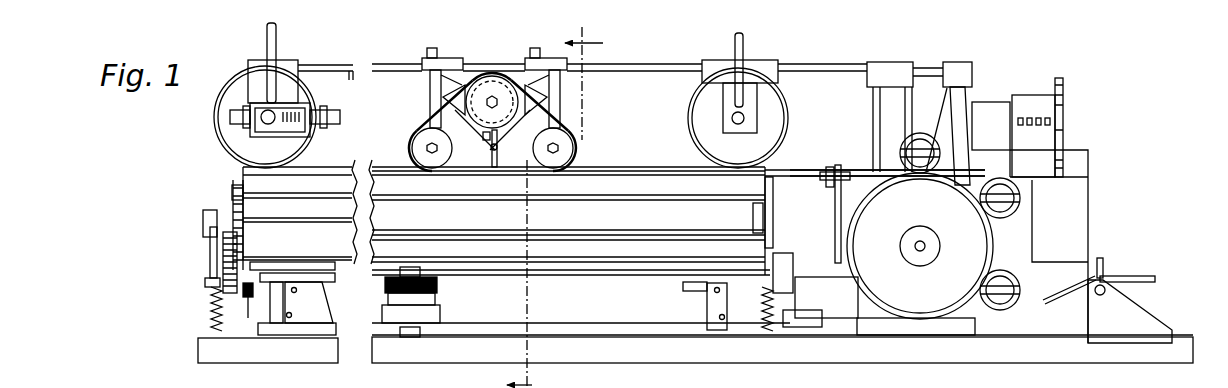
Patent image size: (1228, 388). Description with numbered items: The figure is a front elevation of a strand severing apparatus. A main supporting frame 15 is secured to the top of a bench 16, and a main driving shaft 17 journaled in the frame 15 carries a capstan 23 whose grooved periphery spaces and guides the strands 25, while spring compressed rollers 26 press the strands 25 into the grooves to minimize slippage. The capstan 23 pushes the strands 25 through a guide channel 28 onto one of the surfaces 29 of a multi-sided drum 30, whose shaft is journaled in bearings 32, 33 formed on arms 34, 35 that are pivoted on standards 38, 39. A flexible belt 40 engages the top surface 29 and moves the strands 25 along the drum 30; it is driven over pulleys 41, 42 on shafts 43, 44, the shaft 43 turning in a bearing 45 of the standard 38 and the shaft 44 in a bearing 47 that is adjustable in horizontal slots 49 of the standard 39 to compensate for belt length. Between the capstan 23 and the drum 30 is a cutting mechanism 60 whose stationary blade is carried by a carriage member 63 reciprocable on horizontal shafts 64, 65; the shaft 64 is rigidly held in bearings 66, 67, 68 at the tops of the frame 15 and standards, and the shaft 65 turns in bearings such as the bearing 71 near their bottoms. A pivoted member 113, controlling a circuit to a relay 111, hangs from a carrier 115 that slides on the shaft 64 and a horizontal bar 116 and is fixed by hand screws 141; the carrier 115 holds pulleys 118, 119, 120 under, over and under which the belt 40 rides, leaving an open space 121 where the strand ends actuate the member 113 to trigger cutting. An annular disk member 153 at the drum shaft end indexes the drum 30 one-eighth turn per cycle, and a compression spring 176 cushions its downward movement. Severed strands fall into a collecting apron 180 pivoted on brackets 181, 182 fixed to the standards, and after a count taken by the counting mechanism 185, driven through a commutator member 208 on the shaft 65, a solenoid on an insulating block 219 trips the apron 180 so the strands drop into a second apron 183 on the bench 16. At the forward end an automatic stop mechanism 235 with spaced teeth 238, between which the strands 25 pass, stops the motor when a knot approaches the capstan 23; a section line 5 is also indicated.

The section line 5 is at (555, 204).
The main supporting frame 15 is at (958, 318).
The bench 16 is at (700, 361).
The main driving shaft 17 is at (914, 248).
The capstan 23 is at (990, 245).
The strands 25 is at (1153, 253).
The spring compressed rollers 26 is at (982, 202).
The guide channel 28 is at (858, 213).
The surfaces of the drum 29 is at (657, 227).
The multi-sided drum 30 is at (613, 198).
The bearing 32 is at (772, 193).
The bearing 33 is at (232, 196).
The arm 34 is at (790, 229).
The arm 35 is at (202, 204).
The standard 38 is at (735, 60).
The standard 39 is at (283, 58).
The flexible belt 40 is at (393, 163).
The pulley 41 is at (770, 100).
The pulley 42 is at (300, 100).
The shaft 43 is at (745, 117).
The shaft 44 is at (268, 110).
The bearing 45 is at (730, 118).
The bearing 47 is at (253, 118).
The horizontal slots 49 is at (312, 104).
The cutting mechanism 60 is at (828, 206).
The carriage member 63 is at (890, 142).
The horizontal shaft 64 is at (847, 73).
The horizontal shaft 65 is at (861, 266).
The bearing 66 is at (956, 62).
The bearing 67 is at (780, 58).
The bearing 68 is at (300, 63).
The bearing 71 is at (375, 222).
The relay 111 is at (984, 100).
The pivoted member 113 is at (493, 219).
The carrier 115 is at (563, 112).
The horizontal bar 116 is at (352, 163).
The pulley 118 is at (566, 152).
The pulley 119 is at (483, 90).
The pulley 120 is at (430, 176).
The open space 121 is at (494, 168).
The hand screws 141 is at (545, 55).
The annular disk member 153 is at (230, 191).
The compression spring 176 is at (220, 323).
The collecting apron 180 is at (500, 276).
The bracket 181 is at (703, 315).
The bracket 182 is at (300, 308).
The second apron 183 is at (572, 325).
The counting mechanism 185 is at (1050, 64).
The commutator member 208 is at (806, 265).
The insulating block 219 is at (365, 305).
The automatic stop mechanism 235 is at (1143, 290).
The teeth 238 is at (1100, 260).